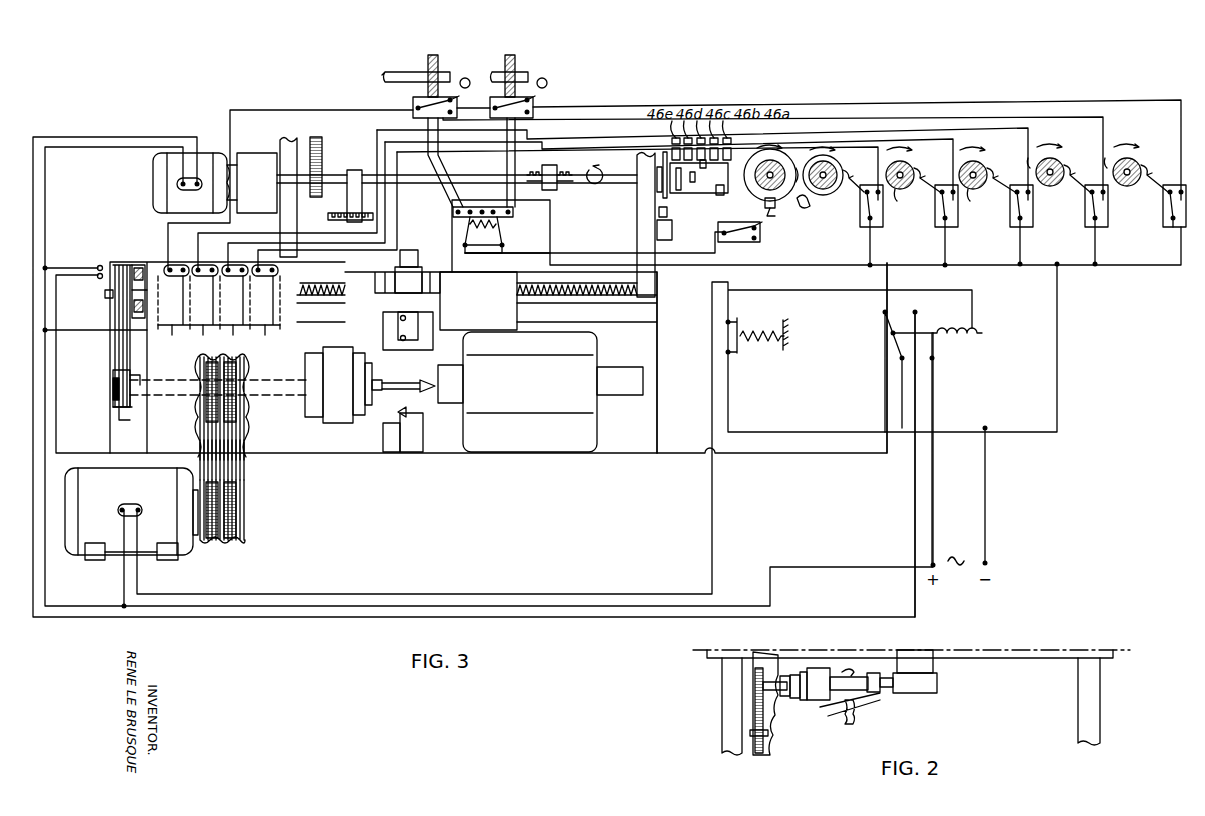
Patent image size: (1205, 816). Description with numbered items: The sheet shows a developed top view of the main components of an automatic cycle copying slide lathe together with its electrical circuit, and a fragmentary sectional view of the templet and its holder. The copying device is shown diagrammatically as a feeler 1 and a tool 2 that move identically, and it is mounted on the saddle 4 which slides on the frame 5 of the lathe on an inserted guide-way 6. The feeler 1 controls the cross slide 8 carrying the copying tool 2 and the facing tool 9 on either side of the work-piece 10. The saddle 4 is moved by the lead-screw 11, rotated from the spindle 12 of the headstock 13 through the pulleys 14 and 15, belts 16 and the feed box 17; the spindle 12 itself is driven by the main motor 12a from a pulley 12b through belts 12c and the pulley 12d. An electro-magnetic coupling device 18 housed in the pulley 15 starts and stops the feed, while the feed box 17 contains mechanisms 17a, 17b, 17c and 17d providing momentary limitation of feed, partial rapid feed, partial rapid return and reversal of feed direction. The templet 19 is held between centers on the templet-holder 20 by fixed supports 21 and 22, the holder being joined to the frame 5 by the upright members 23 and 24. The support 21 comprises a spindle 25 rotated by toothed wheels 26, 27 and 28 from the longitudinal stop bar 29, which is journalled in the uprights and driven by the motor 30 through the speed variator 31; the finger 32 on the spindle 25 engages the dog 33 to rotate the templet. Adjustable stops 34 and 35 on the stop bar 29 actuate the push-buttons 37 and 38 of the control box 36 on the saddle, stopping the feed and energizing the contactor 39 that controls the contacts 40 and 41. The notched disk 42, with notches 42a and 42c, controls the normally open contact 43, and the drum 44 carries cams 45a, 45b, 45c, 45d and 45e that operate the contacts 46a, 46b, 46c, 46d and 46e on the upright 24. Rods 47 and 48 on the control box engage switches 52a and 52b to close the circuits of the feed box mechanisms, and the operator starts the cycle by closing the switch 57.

In FIG. 3, the feeler 1 is at (415, 250).
In FIG. 2, the feeler 1 is at (857, 718).
In FIG. 3, the tool 2 is at (404, 415).
In FIG. 3, the saddle 4 is at (481, 280).
In FIG. 3, the frame 5 is at (654, 343).
In FIG. 3, the guide-way 6 is at (649, 323).
In FIG. 3, the cross slide 8 is at (441, 409).
In FIG. 3, the facing tool 9 is at (408, 347).
In FIG. 3, the work-piece 10 is at (404, 384).
In FIG. 3, the lead-screw 11 is at (589, 284).
In FIG. 3, the spindle 12 is at (144, 380).
In FIG. 3, the main motor 12a is at (186, 552).
In FIG. 3, the pulley 12b is at (244, 501).
In FIG. 3, the belts 12c is at (239, 434).
In FIG. 3, the pulley 12d is at (203, 371).
In FIG. 3, the headstock 13 is at (300, 346).
In FIG. 3, the pulley 14 is at (126, 418).
In FIG. 3, the pulley 15 is at (128, 261).
In FIG. 3, the belts 16 is at (114, 367).
In FIG. 3, the feed box 17 is at (218, 261).
In FIG. 3, the mechanism for momentary limitation of feed movements 17a is at (201, 335).
In FIG. 3, the mechanism for partial rapid feed 17b is at (172, 335).
In FIG. 3, the mechanism for partial rapid return 17c is at (231, 335).
In FIG. 3, the mechanism for reversal of feed direction 17d is at (264, 335).
In FIG. 3, the electro-magnetic coupling device 18 is at (145, 265).
In FIG. 2, the templet 19 is at (867, 673).
In FIG. 2, the templet-holder 20 is at (1048, 656).
In FIG. 2, the support 21 is at (785, 676).
In FIG. 2, the support 22 is at (903, 651).
In FIG. 3, the upright member 23 is at (278, 144).
In FIG. 2, the upright member 23 is at (722, 752).
In FIG. 3, the upright member 24 is at (637, 219).
In FIG. 2, the upright member 24 is at (1100, 658).
In FIG. 2, the spindle 25 is at (771, 670).
In FIG. 2, the toothed wheel 26 is at (763, 686).
In FIG. 3, the toothed wheel 27 is at (322, 141).
In FIG. 2, the toothed wheel 27 is at (755, 718).
In FIG. 3, the toothed wheel 28 is at (322, 209).
In FIG. 3, the stop bar 29 is at (478, 176).
In FIG. 3, the motor 30 is at (159, 160).
In FIG. 3, the speed variator 31 is at (201, 150).
In FIG. 2, the finger 32 is at (811, 668).
In FIG. 2, the dog 33 is at (796, 698).
In FIG. 3, the adjustable stop 34 is at (349, 172).
In FIG. 3, the adjustable stop 35 is at (556, 171).
In FIG. 3, the electric control box 36 is at (520, 254).
In FIG. 3, the push-button 37 is at (456, 245).
In FIG. 3, the push-button 38 is at (505, 233).
In FIG. 3, the contactor 39 is at (964, 339).
In FIG. 3, the contact 40 is at (883, 313).
In FIG. 3, the contact 41 is at (915, 312).
In FIG. 3, the notched disk 42 is at (790, 154).
In FIG. 3, the notch 42a is at (798, 198).
In FIG. 3, the notch 42c is at (764, 203).
In FIG. 3, the contact 43 is at (718, 227).
In FIG. 3, the drum 44 is at (696, 196).
In FIG. 3, the cam 45a is at (1107, 162).
In FIG. 3, the cam 45b is at (1031, 160).
In FIG. 3, the cam 45c is at (968, 195).
In FIG. 3, the cam 45d is at (906, 195).
In FIG. 3, the cam 45e is at (843, 158).
In FIG. 3, the contact 46a is at (1174, 229).
In FIG. 3, the contact 46b is at (1088, 229).
In FIG. 3, the contact 46c is at (1013, 229).
In FIG. 3, the contact 46d is at (943, 229).
In FIG. 3, the contact 46e is at (858, 229).
In FIG. 3, the rod 47 is at (534, 71).
In FIG. 3, the rod 48 is at (456, 74).
In FIG. 3, the switch 52a is at (533, 104).
In FIG. 3, the switch 52b is at (415, 97).
In FIG. 3, the switch 57 is at (744, 352).